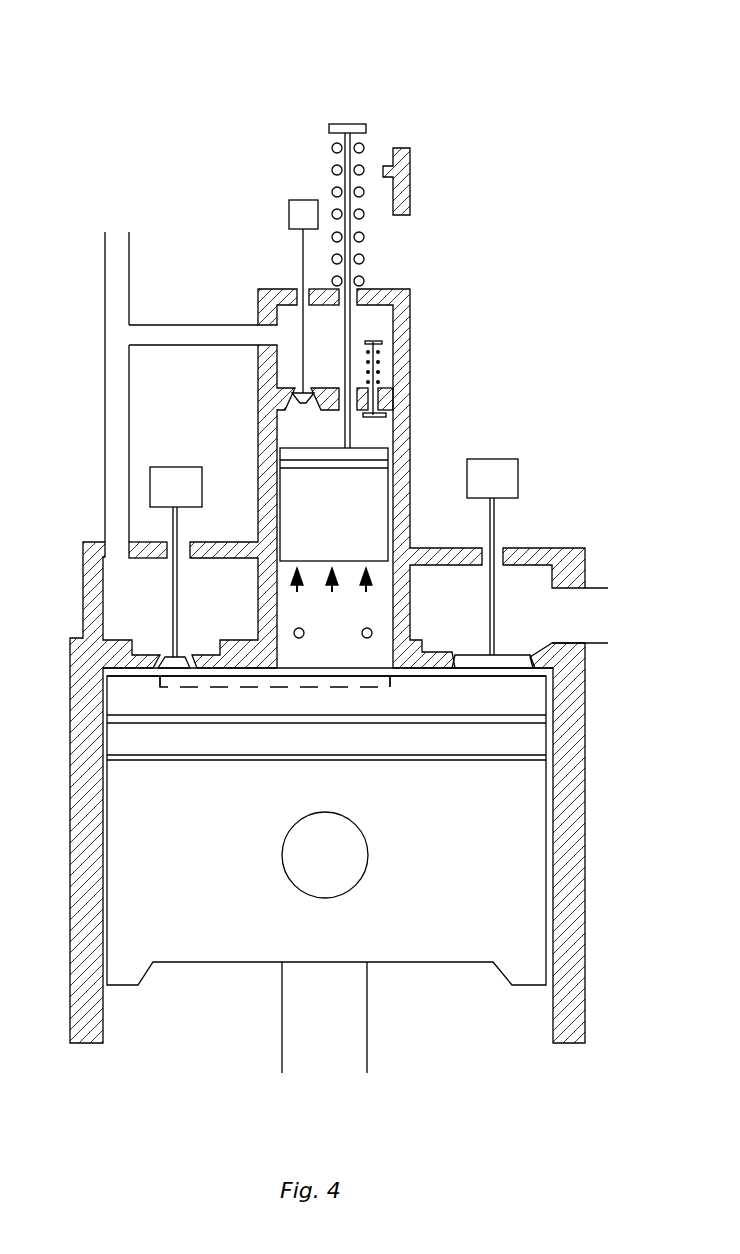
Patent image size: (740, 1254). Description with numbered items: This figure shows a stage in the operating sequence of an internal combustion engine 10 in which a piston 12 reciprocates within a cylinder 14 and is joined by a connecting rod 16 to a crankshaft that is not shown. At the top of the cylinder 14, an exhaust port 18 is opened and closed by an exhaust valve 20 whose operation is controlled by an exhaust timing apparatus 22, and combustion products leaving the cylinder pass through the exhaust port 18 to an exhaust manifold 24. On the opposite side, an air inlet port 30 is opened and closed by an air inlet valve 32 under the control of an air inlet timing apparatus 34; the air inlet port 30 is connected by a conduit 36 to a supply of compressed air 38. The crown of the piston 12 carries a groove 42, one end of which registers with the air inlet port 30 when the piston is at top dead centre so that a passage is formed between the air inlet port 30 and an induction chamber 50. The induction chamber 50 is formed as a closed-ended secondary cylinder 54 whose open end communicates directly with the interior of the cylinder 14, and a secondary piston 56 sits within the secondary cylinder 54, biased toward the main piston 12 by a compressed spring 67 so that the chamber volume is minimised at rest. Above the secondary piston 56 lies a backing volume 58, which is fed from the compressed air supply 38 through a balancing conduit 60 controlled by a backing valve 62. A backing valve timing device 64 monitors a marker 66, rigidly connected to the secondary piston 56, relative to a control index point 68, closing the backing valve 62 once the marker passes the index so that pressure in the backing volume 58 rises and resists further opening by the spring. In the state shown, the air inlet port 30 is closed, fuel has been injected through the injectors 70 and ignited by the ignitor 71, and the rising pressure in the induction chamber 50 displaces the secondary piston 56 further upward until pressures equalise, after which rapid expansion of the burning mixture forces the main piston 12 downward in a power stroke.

The internal combustion engine 10 is at (599, 345).
The piston 12 is at (470, 872).
The cylinder 14 is at (472, 1049).
The connecting rod 16 is at (341, 1034).
The exhaust port 18 is at (520, 665).
The exhaust valve 20 is at (468, 656).
The exhaust timing apparatus 22 is at (508, 479).
The exhaust manifold 24 is at (590, 617).
The air inlet port 30 is at (170, 665).
The air inlet valve 32 is at (188, 660).
The air inlet timing apparatus 34 is at (185, 485).
The conduit 36 is at (105, 451).
The supply of compressed air 38 is at (118, 231).
The groove 42 is at (248, 680).
The induction chamber 50 is at (357, 666).
The secondary cylinder 54 is at (385, 426).
The secondary piston 56 is at (352, 534).
The backing volume 58 is at (322, 437).
The balancing conduit 60 is at (203, 337).
The backing valve 62 is at (312, 392).
The backing valve timing device 64 is at (304, 212).
The marker 66 is at (340, 124).
The compressed spring 67 is at (365, 237).
The control index point 68 is at (388, 165).
The injectors 70 is at (294, 635).
The ignitor 71 is at (368, 636).